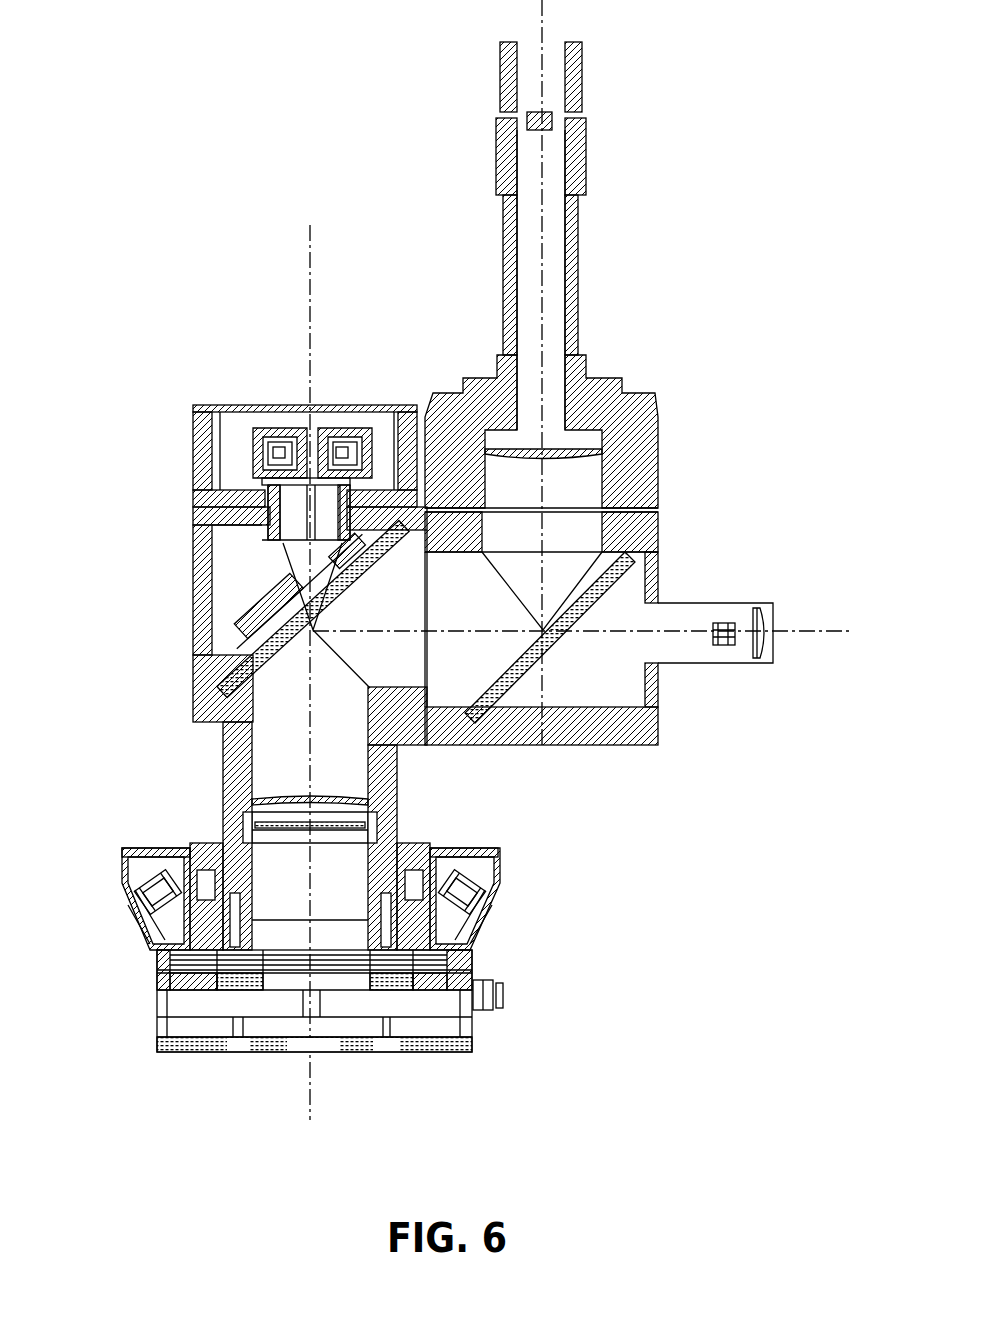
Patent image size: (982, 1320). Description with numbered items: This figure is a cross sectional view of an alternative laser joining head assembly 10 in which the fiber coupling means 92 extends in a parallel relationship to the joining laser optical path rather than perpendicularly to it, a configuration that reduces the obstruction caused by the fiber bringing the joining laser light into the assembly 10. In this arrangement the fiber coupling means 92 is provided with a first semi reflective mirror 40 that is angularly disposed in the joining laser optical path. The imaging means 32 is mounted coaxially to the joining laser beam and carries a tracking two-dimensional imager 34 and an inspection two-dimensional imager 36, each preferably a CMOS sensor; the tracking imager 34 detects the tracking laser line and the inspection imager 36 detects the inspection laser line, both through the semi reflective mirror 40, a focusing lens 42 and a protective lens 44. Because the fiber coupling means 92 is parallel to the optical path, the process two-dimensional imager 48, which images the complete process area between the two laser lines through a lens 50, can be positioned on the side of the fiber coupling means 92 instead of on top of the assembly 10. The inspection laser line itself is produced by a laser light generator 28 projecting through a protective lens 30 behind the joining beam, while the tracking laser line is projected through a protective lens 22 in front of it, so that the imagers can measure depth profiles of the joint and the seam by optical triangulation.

The laser joining head assembly 10 is at (188, 113).
The protective lens 22 is at (438, 986).
The laser light generator 28 is at (145, 926).
The protective lens 30 is at (488, 917).
The imaging means 32 is at (191, 429).
The tracking 2D imager 34 is at (361, 427).
The inspection 2D imager 36 is at (273, 427).
The semi reflective mirror 40 is at (235, 648).
The focusing lens 42 is at (373, 792).
The protective lens 44 is at (365, 826).
The process 2D imager 48 is at (770, 611).
The lens 50 is at (734, 619).
The fiber coupling means 92 is at (590, 238).